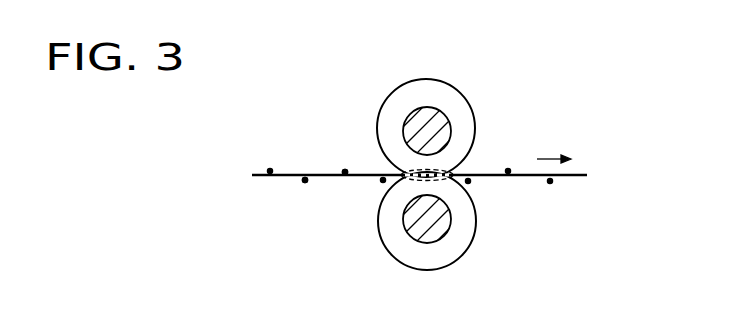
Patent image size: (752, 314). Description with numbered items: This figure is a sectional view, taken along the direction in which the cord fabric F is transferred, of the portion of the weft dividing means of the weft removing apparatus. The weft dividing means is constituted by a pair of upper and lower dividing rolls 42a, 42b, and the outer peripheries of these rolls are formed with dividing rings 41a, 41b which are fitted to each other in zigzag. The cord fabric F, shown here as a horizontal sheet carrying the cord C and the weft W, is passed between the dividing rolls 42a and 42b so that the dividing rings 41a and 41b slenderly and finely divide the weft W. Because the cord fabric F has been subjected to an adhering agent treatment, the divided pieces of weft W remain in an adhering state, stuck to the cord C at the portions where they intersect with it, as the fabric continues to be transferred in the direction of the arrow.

The dividing ring 41a is at (422, 92).
The upper dividing roll 42a is at (434, 120).
The dividing ring 41b is at (450, 252).
The lower dividing roll 42b is at (447, 215).
The cord fabric F is at (252, 173).
The cord C is at (287, 178).
The weft W is at (344, 172).